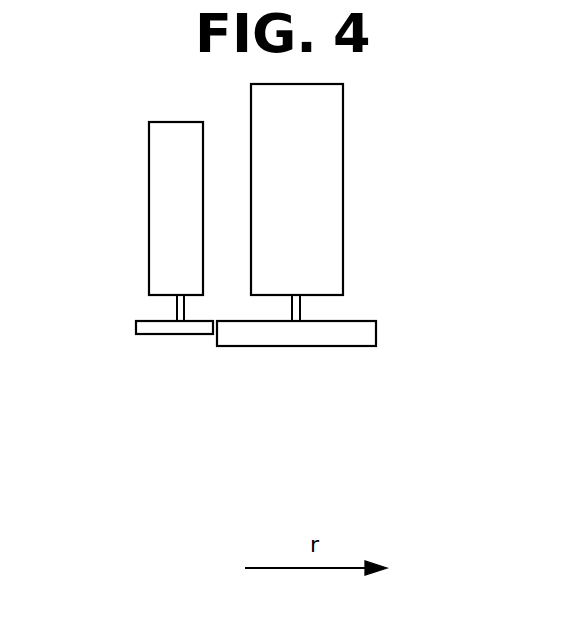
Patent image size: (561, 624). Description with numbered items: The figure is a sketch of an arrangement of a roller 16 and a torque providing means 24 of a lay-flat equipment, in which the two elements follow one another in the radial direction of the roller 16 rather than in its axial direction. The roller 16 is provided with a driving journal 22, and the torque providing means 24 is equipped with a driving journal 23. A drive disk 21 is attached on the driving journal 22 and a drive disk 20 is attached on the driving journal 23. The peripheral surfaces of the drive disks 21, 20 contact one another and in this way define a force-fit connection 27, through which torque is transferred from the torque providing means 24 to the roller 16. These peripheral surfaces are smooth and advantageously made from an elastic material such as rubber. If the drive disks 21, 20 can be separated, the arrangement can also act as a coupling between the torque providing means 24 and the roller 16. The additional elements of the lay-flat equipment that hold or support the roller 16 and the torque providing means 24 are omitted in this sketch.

The roller 16 is at (158, 178).
The torque providing means 24 is at (330, 137).
The driving journal 22 is at (172, 300).
The driving journal 23 is at (300, 308).
The drive disk 21 is at (155, 335).
The drive disk 20 is at (360, 338).
The force-fit connection 27 is at (192, 358).